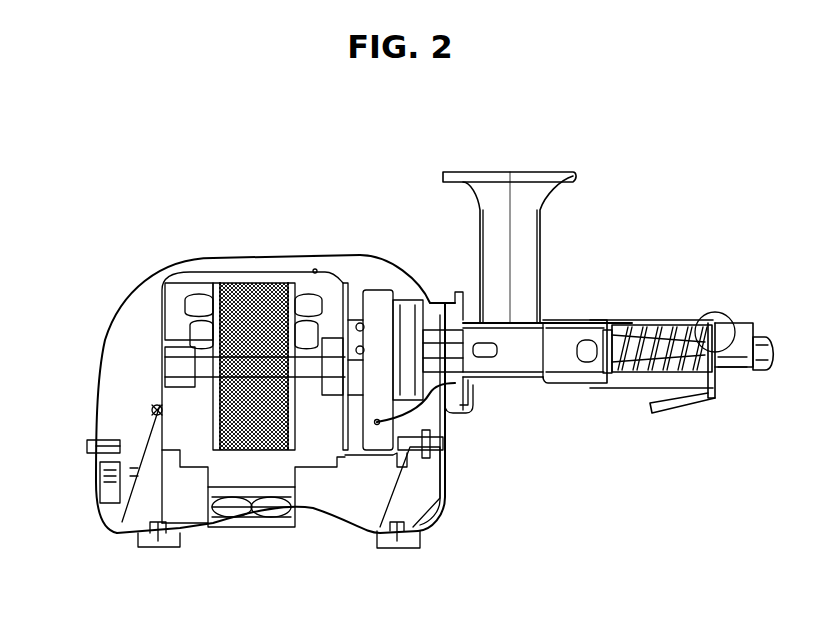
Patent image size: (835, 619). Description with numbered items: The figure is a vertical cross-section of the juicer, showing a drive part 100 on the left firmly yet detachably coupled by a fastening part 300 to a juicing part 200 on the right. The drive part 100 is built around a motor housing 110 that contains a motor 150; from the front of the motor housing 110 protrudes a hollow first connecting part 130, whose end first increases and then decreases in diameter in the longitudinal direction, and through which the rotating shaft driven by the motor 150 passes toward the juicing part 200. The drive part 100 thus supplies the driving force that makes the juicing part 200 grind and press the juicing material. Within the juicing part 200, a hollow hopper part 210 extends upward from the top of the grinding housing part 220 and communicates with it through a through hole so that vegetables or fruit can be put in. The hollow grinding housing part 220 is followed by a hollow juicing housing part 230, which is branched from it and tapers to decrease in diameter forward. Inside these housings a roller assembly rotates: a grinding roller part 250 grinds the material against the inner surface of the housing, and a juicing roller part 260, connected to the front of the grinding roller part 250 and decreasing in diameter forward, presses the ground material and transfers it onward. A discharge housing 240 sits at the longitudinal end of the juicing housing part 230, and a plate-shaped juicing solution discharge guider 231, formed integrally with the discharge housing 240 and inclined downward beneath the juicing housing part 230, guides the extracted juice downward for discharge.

The drive part 100 is at (98, 250).
The motor housing 110 is at (282, 256).
The first connecting part 130 is at (432, 297).
The motor 150 is at (242, 283).
The juicing part 200 is at (665, 230).
The hopper part 210 is at (537, 172).
The grinding housing part 220 is at (547, 323).
The juicing housing part 230 is at (682, 322).
The juicing solution discharge guider 231 is at (678, 403).
The discharge housing 240 is at (737, 323).
The grinding roller part 250 is at (593, 323).
The juicing roller part 260 is at (643, 367).
The fastening part 300 is at (451, 298).